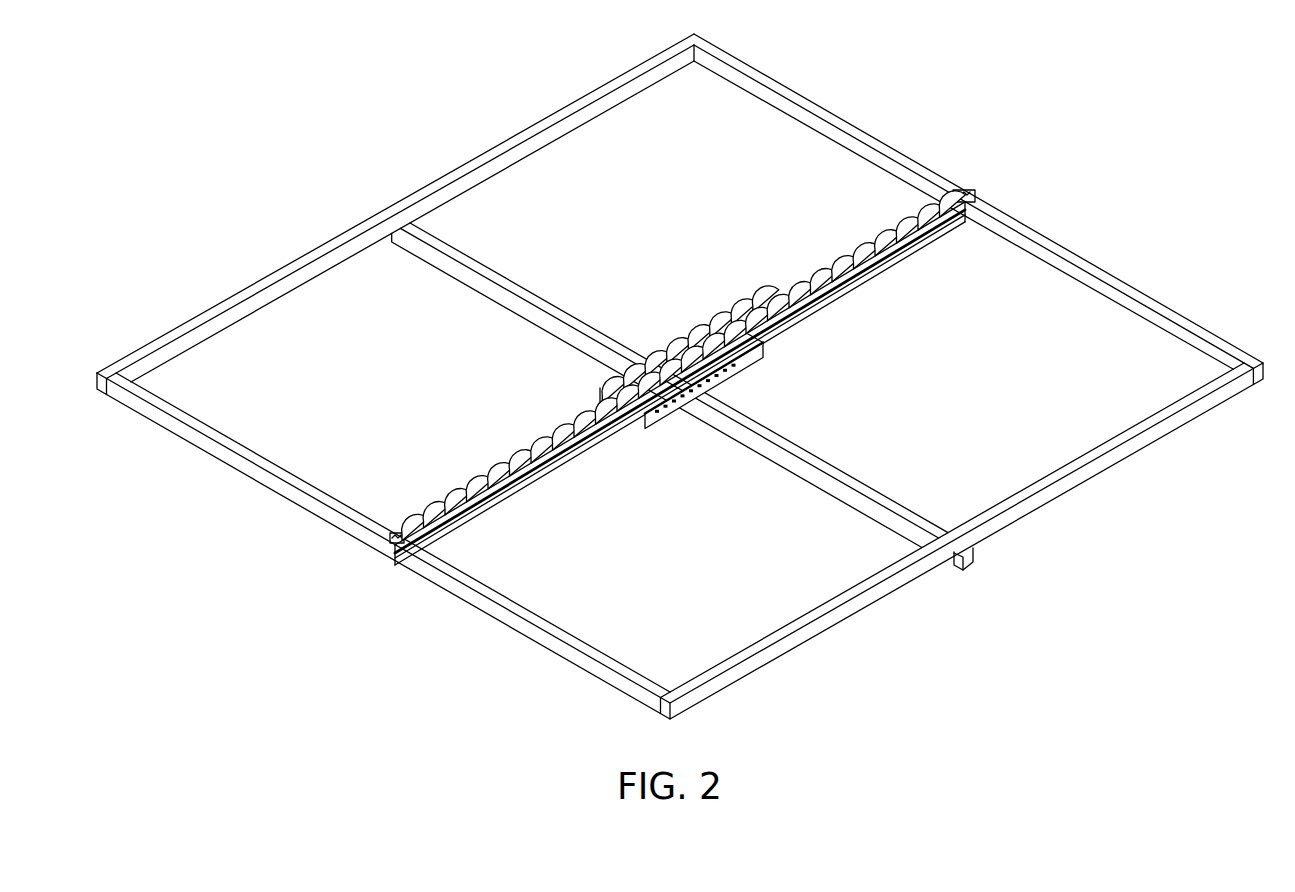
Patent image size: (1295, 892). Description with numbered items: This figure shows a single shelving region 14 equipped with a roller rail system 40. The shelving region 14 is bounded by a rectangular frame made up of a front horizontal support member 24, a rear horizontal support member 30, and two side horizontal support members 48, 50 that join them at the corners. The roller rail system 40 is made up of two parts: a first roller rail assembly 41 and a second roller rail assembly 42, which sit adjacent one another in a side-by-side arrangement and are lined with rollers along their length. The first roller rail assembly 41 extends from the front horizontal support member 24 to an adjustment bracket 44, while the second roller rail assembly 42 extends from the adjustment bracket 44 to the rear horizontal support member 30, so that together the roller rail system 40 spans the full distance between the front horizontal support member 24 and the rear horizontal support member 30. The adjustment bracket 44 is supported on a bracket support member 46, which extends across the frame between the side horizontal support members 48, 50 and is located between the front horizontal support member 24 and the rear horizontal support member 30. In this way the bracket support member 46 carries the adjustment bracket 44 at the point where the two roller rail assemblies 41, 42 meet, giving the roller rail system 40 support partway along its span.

The shelving region 14 is at (1095, 121).
The front horizontal support member 24 is at (297, 497).
The rear horizontal support member 30 is at (1130, 288).
The roller rail system 40 is at (1074, 222).
The first roller rail assembly 41 is at (785, 352).
The second roller rail assembly 42 is at (771, 267).
The adjustment bracket 44 is at (681, 430).
The bracket support member 46 is at (866, 482).
The side horizontal support member 48 is at (344, 231).
The side horizontal support member 50 is at (1003, 523).